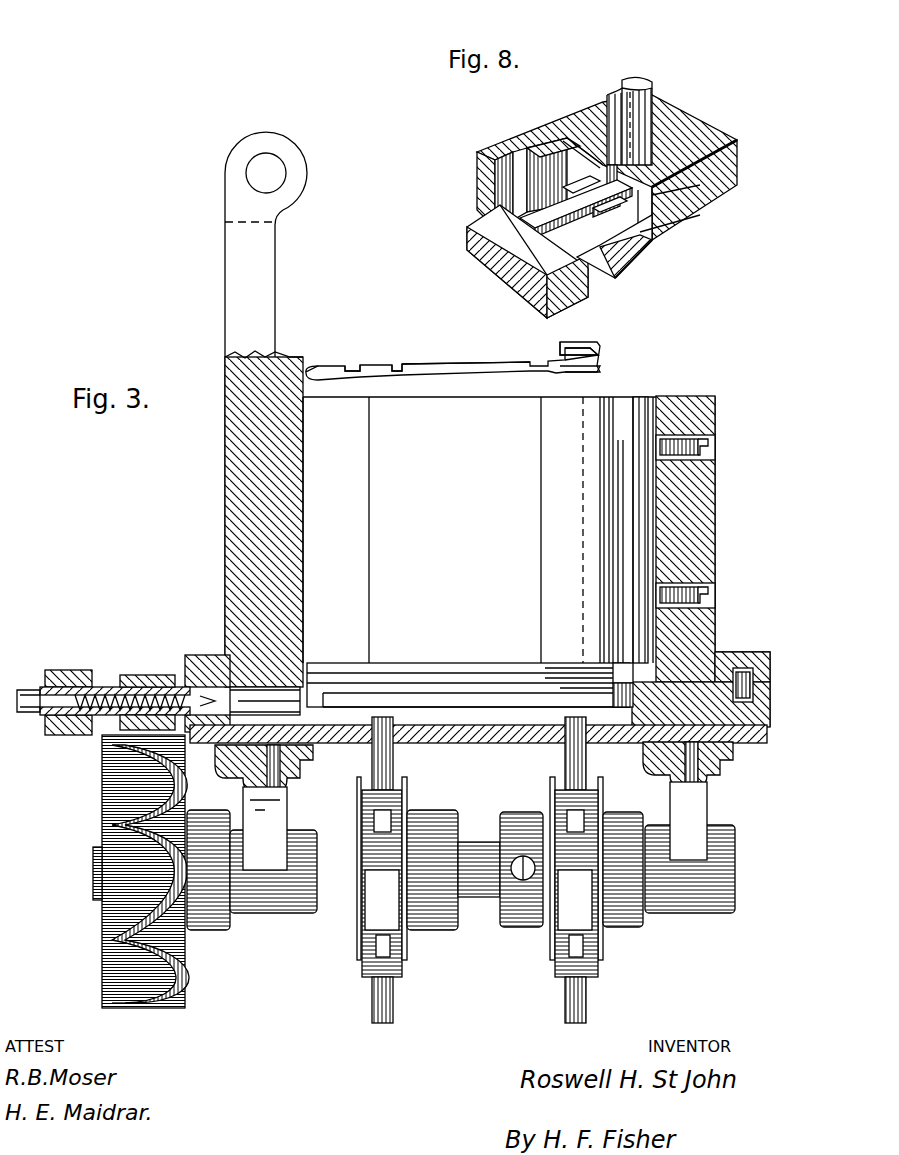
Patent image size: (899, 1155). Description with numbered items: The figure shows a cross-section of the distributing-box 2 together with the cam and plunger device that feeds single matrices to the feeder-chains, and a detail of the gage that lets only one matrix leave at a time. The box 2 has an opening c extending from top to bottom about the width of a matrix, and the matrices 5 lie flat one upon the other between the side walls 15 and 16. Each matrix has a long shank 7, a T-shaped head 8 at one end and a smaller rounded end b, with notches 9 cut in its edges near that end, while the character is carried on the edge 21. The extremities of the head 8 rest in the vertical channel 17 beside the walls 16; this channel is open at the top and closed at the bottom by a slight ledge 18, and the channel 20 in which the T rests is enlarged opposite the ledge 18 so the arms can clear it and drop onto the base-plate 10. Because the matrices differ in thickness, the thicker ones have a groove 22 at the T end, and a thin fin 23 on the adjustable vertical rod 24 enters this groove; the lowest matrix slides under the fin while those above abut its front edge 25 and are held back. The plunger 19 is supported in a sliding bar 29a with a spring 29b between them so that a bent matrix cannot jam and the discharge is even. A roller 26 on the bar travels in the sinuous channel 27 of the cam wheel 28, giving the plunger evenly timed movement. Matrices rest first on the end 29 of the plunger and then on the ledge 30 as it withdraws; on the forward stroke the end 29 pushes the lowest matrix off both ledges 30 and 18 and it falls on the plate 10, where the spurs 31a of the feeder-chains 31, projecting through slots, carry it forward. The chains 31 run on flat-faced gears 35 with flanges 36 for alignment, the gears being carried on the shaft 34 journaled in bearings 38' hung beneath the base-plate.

In FIG. 3, the distributing-box 2 is at (705, 398).
In FIG. 8, the distributing-box 2 is at (690, 130).
In FIG. 3, the matrices 5 is at (446, 363).
In FIG. 8, the matrices 5 is at (528, 232).
In FIG. 3, the body portion or shank 7 is at (486, 363).
In FIG. 3, the head 8 is at (603, 368).
In FIG. 8, the head 8 is at (620, 212).
In FIG. 3, the notches or recesses 9 is at (356, 368).
In FIG. 3, the base-plate 10 is at (472, 744).
In FIG. 8, the base-plate 10 is at (640, 253).
In FIG. 3, the wall 15 is at (347, 530).
In FIG. 3, the wall 16 is at (633, 560).
In FIG. 8, the wall 16 is at (500, 193).
In FIG. 3, the vertical channel 17 is at (610, 600).
In FIG. 8, the vertical channel 17 is at (540, 148).
In FIG. 3, the ledge 18 is at (598, 718).
In FIG. 8, the ledge 18 is at (480, 212).
In FIG. 3, the plunger 19 is at (232, 698).
In FIG. 3, the channel 20 is at (608, 620).
In FIG. 8, the channel 20 is at (578, 146).
In FIG. 3, the edge 21 is at (400, 364).
In FIG. 3, the groove or channel 22 is at (600, 355).
In FIG. 8, the groove or channel 22 is at (690, 228).
In FIG. 3, the fin 23 is at (627, 667).
In FIG. 8, the fin 23 is at (690, 196).
In FIG. 3, the vertical rod or bar 24 is at (640, 577).
In FIG. 8, the vertical rod or bar 24 is at (653, 96).
In FIG. 3, the front edge 25 is at (580, 670).
In FIG. 8, the front edge 25 is at (580, 190).
In FIG. 3, the roller 26 is at (110, 750).
In FIG. 3, the sinuous channel 27 is at (150, 1006).
In FIG. 3, the cam roller or wheel 28 is at (100, 790).
In FIG. 3, the end of the plunger 29 is at (305, 700).
In FIG. 3, the sliding bar 29a is at (88, 687).
In FIG. 3, the spring 29b is at (145, 687).
In FIG. 3, the ledge 30 is at (330, 700).
In FIG. 3, the feeder-chains 31 is at (400, 790).
In FIG. 3, the engaging spurs 31a is at (315, 752).
In FIG. 3, the shaft 34 is at (475, 838).
In FIG. 3, the flat-faced gears 35 is at (455, 925).
In FIG. 3, the flanges 36 is at (357, 957).
In FIG. 3, the bearings 38' is at (252, 880).
In FIG. 3, the strip end a is at (588, 346).
In FIG. 3, the smaller end b is at (310, 359).
In FIG. 3, the opening c is at (496, 530).
In FIG. 8, the opening c is at (475, 172).